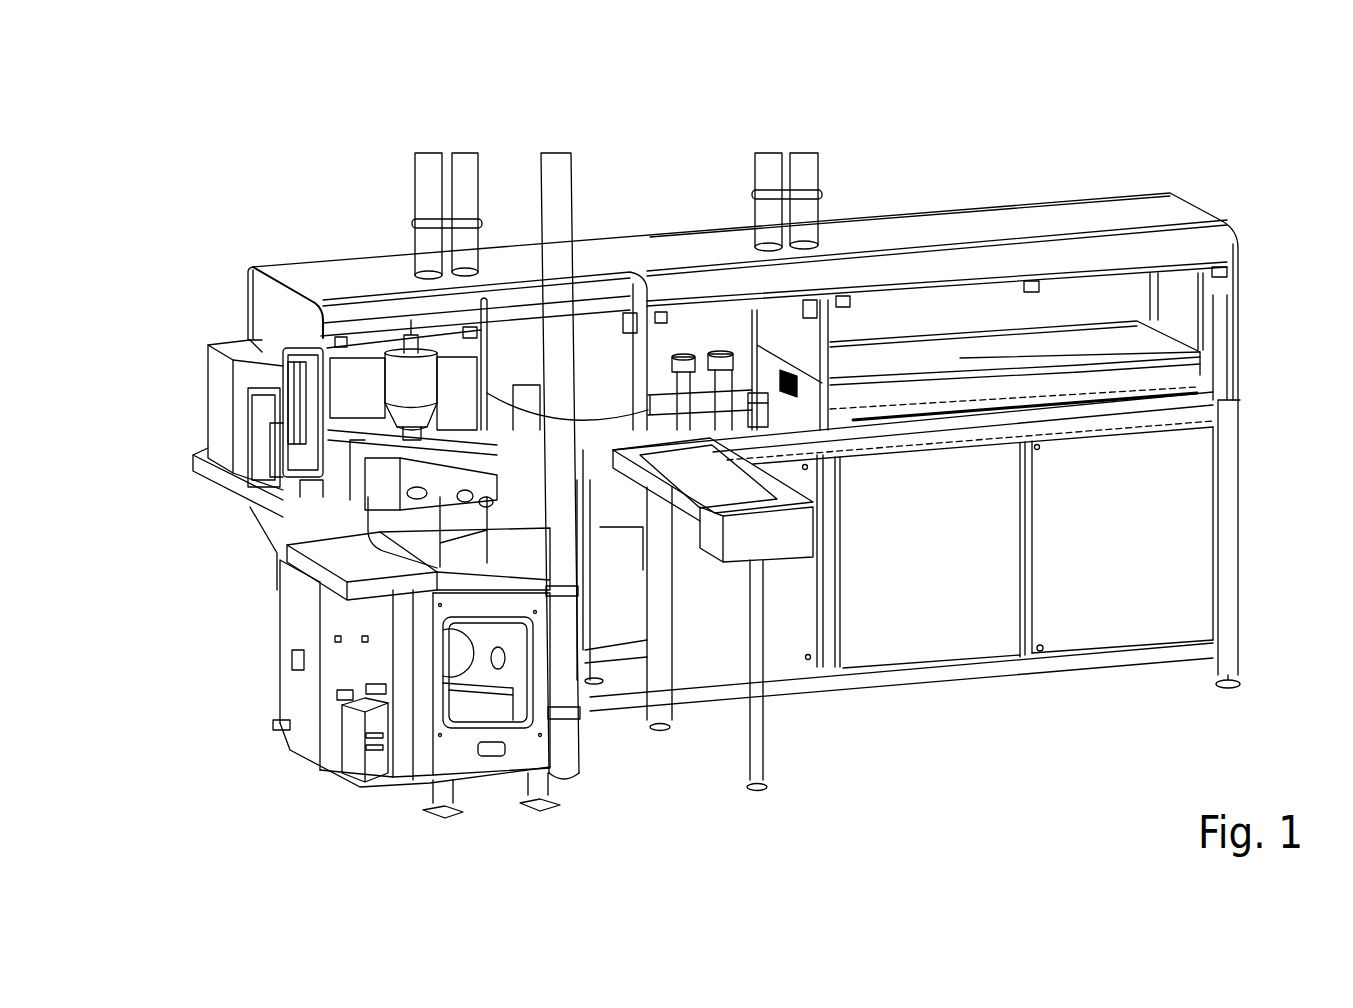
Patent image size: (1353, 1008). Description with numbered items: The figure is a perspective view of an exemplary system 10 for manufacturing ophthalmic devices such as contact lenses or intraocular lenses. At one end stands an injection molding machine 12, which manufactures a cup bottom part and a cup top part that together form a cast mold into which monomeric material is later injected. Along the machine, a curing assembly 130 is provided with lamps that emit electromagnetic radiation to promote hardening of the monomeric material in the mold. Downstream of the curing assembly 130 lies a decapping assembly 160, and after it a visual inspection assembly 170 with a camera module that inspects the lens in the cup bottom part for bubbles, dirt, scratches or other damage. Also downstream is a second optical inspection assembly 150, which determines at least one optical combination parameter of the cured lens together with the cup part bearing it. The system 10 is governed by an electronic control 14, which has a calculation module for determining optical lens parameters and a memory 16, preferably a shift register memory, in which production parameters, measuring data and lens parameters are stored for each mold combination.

The system 10 is at (830, 113).
The injection molding machine 12 is at (242, 530).
The electronic control 14 is at (317, 770).
The memory 16 is at (375, 752).
The curing assembly 130 is at (1133, 345).
The second optical inspection assembly 150 is at (677, 357).
The decapping assembly 160 is at (772, 385).
The visual inspection assembly 170 is at (727, 357).